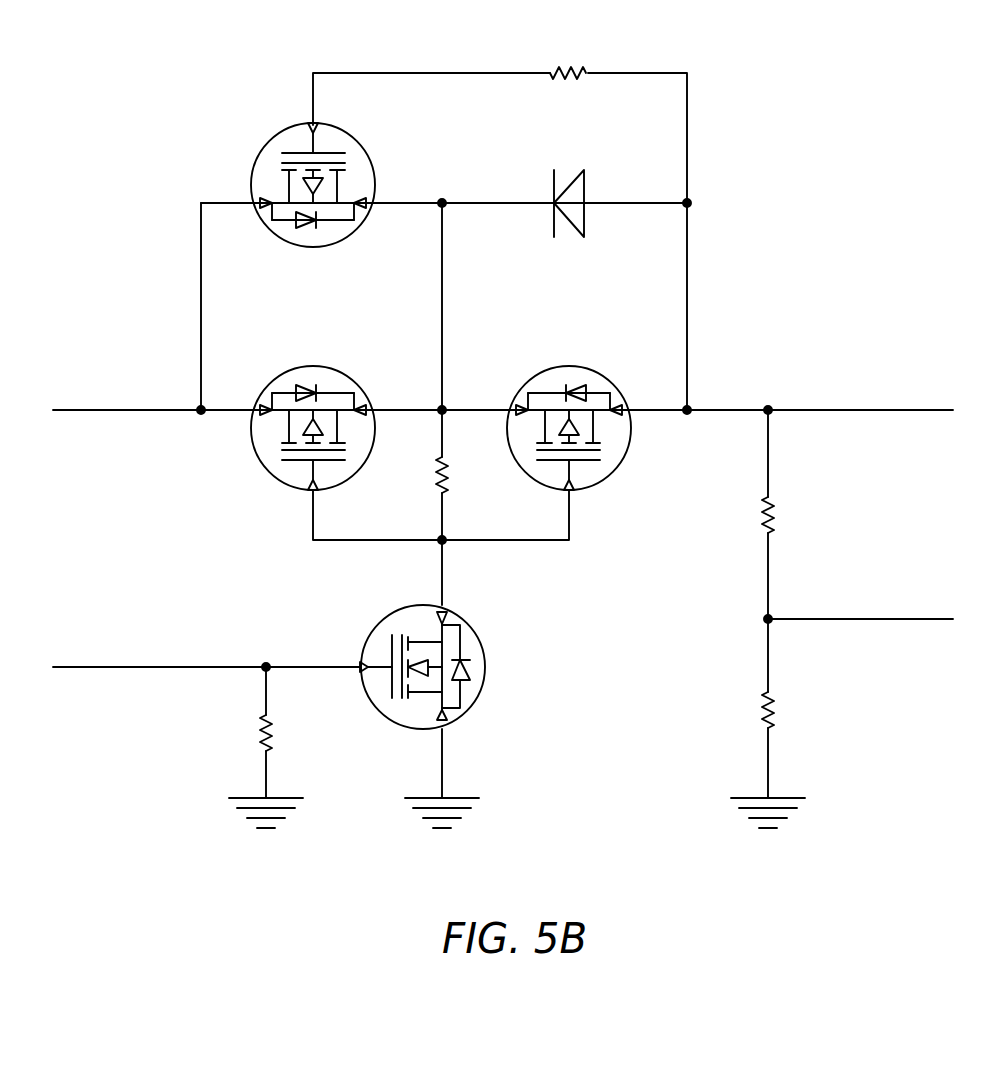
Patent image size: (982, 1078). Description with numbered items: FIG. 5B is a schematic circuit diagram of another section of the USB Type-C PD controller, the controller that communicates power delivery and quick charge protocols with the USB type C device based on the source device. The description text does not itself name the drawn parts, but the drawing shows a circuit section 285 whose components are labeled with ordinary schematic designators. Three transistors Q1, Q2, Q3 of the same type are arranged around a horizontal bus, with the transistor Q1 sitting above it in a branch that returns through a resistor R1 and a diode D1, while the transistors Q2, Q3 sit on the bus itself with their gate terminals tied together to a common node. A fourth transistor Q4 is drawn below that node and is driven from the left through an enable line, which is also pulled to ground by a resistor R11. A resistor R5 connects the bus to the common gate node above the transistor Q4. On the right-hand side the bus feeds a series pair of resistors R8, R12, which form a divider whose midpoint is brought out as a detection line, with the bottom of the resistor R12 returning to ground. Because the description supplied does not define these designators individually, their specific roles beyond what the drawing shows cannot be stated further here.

The power path selection circuit 285 is at (757, 77).
The P-channel MOSFET AON7401 Q1 is at (312, 209).
The P-channel MOSFET AON7401 Q2 is at (337, 415).
The P-channel MOSFET AON7401 Q3 is at (592, 415).
The N-channel MOSFET 42N7002M3T5G Q4 is at (510, 661).
The Schottky diode SS34 D1 is at (570, 204).
The resistor 100K R1 is at (569, 72).
The resistor 10K R5 is at (462, 476).
The resistor 36K R8 is at (792, 517).
The resistor 100K R11 is at (295, 734).
The resistor 12K R12 is at (793, 707).